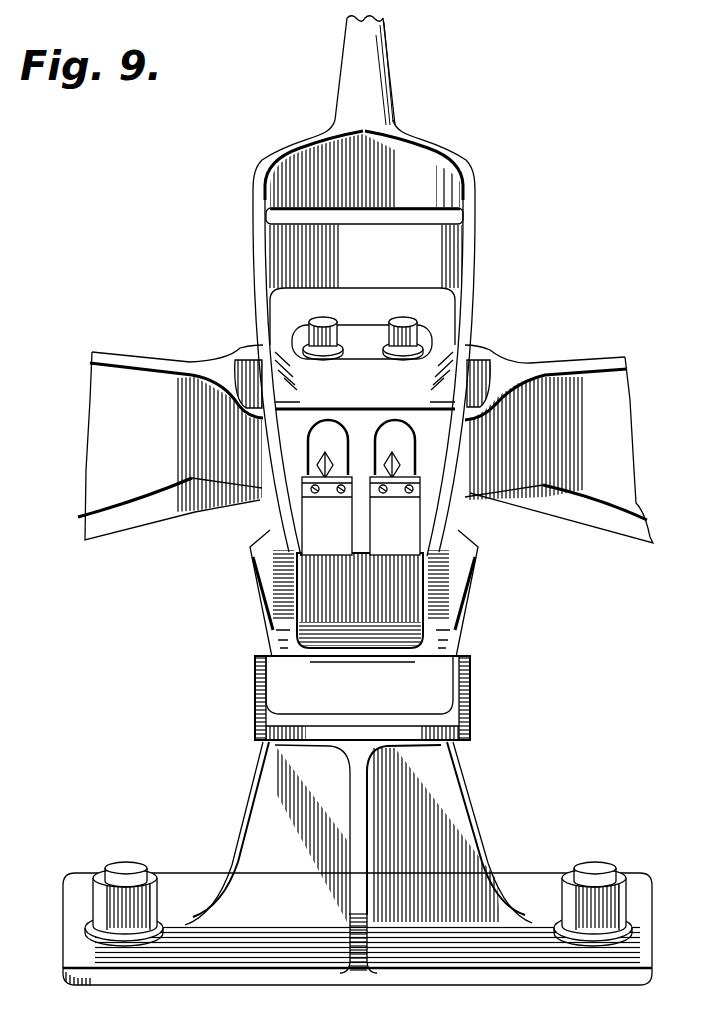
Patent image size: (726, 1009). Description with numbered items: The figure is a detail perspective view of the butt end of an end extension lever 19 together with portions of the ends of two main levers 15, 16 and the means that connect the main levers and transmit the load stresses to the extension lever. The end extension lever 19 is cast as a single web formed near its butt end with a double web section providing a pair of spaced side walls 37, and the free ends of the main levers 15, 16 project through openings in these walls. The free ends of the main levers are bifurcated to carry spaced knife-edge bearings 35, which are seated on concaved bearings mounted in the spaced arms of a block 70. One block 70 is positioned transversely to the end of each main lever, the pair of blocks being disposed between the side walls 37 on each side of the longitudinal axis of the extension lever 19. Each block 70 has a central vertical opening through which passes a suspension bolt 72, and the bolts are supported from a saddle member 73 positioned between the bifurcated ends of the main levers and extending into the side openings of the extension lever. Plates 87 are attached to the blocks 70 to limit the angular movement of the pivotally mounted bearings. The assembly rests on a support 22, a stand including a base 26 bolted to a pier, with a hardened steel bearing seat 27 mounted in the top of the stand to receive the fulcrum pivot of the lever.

The end extension lever 19 is at (386, 72).
The spaced side walls 37 is at (255, 252).
The suspension bolt 72 is at (403, 320).
The saddle member 73 is at (365, 380).
The knife-edge bearings 35 is at (397, 462).
The main lever 15 is at (170, 442).
The main lever 16 is at (559, 444).
The plates 87 is at (312, 495).
The block 70 is at (361, 516).
The bearing seat 27 is at (462, 686).
The support 22 is at (255, 808).
The base 26 is at (523, 886).